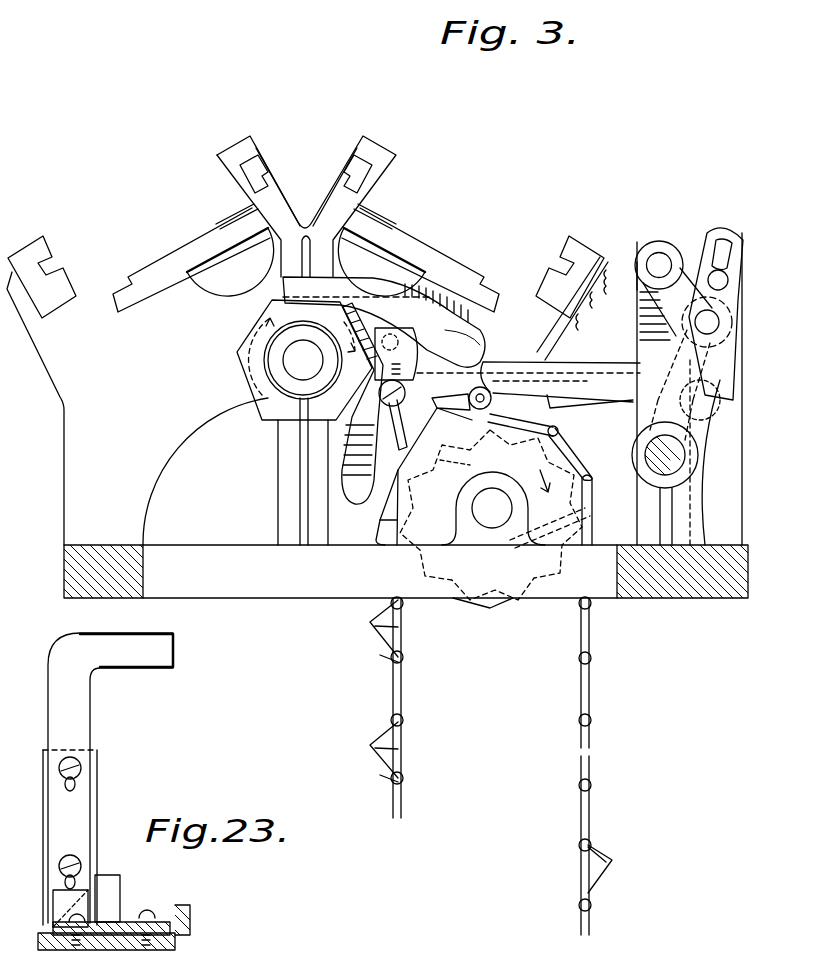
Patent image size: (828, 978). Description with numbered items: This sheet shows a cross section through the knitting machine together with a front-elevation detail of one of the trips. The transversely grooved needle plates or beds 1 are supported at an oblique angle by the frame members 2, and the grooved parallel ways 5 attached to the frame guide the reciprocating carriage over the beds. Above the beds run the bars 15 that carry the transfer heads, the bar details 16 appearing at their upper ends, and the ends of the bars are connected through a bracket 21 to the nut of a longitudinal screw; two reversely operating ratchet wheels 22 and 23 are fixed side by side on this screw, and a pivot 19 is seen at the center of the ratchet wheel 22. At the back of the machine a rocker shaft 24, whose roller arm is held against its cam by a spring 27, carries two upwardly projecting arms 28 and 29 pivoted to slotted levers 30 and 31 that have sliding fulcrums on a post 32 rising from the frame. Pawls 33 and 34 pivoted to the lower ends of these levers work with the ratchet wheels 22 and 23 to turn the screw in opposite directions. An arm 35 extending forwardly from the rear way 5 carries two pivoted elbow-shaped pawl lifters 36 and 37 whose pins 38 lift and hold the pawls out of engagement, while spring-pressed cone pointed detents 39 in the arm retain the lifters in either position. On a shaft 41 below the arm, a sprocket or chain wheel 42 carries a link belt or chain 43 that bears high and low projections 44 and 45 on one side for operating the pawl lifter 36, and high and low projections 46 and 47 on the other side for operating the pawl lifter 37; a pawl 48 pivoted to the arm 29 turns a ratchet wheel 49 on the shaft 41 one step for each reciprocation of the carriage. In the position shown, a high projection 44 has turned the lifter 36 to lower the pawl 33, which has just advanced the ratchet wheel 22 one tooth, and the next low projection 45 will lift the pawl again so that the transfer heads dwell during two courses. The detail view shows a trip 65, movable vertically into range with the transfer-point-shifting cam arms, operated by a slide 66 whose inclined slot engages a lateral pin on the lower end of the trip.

In FIG. 3, the needle plates or beds 1 is at (306, 260).
In FIG. 3, the frame members 2 is at (403, 438).
In FIG. 3, the grooved parallel ways 5 is at (306, 277).
In FIG. 3, the bars 15 is at (244, 180).
In FIG. 3, the notch 16 is at (222, 160).
In FIG. 3, the pivot 19 is at (303, 360).
In FIG. 3, the bracket 21 is at (292, 200).
In FIG. 3, the ratchet wheel 22 is at (248, 374).
In FIG. 3, the ratchet wheel 23 is at (248, 343).
In FIG. 3, the rocker shaft 24 is at (698, 458).
In FIG. 3, the spring 27 is at (604, 500).
In FIG. 3, the arm 28 is at (706, 416).
In FIG. 3, the arm 29 is at (646, 307).
In FIG. 3, the slotted lever 30 is at (740, 262).
In FIG. 3, the slotted lever 31 is at (680, 258).
In FIG. 3, the post 32 is at (742, 440).
In FIG. 3, the pawl 33 is at (384, 322).
In FIG. 3, the pawl 34 is at (469, 323).
In FIG. 3, the arm 35 is at (578, 326).
In FIG. 3, the pawl lifter 36 is at (364, 428).
In FIG. 3, the pawl lifter 37 is at (399, 427).
In FIG. 3, the pins 38 is at (462, 450).
In FIG. 3, the cone pointed detents 39 is at (384, 340).
In FIG. 3, the shaft 41 is at (492, 508).
In FIG. 3, the sprocket or chain wheel 42 is at (496, 496).
In FIG. 3, the link belt or chain 43 is at (404, 694).
In FIG. 3, the high projections 44 is at (390, 518).
In FIG. 3, the low projections 45 is at (378, 776).
In FIG. 3, the high projections 46 is at (610, 865).
In FIG. 3, the low projections 47 is at (592, 478).
In FIG. 3, the pawl 48 is at (528, 396).
In FIG. 3, the ratchet wheel 49 is at (465, 600).
In FIG. 23, the trip 65 is at (108, 780).
In FIG. 23, the slide 66 is at (126, 920).